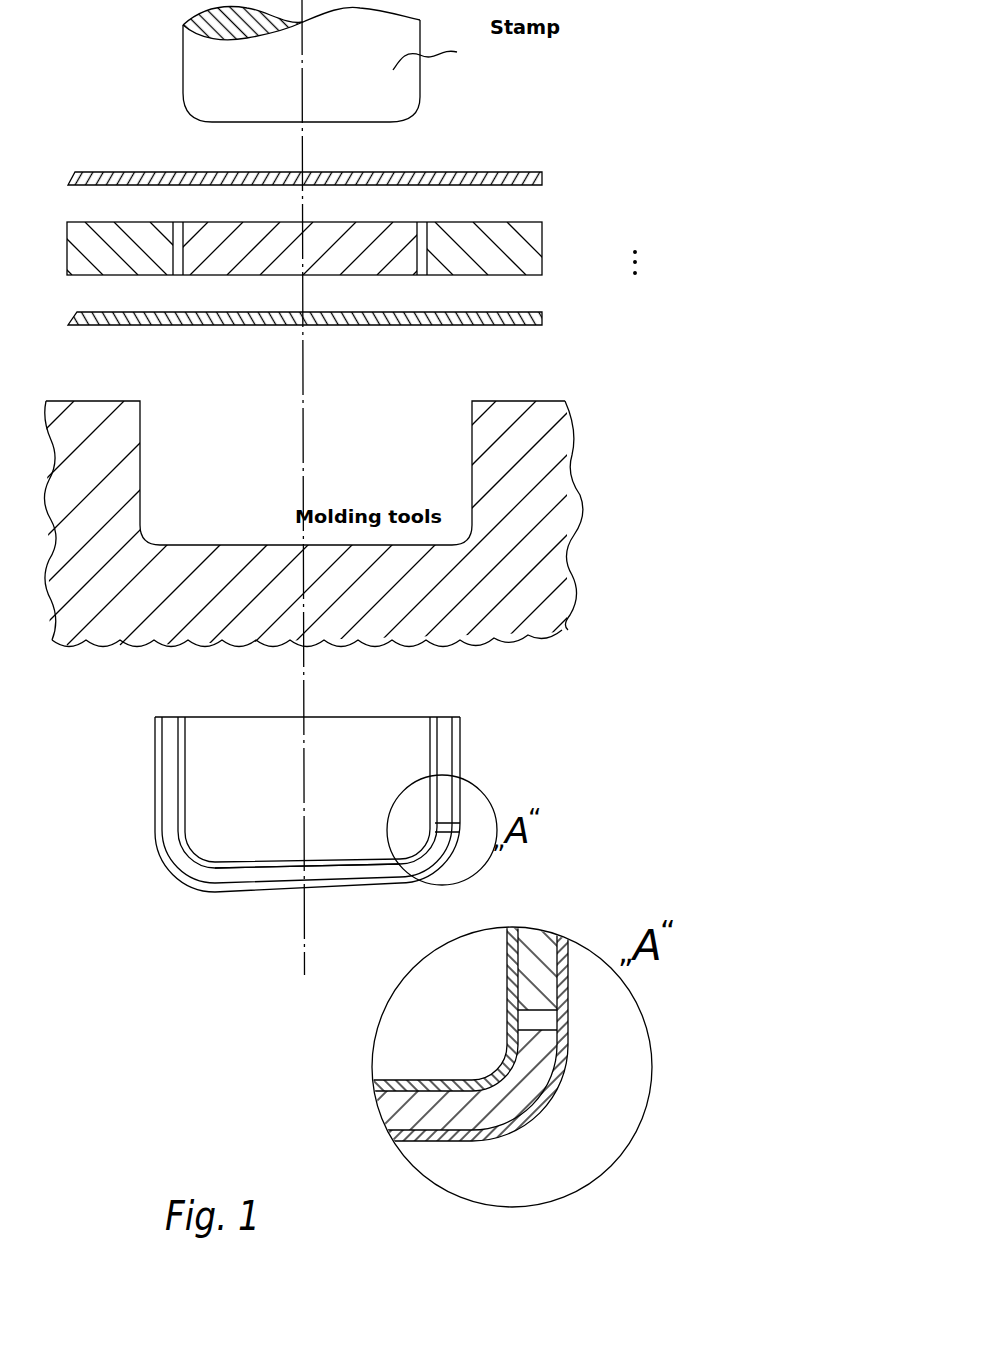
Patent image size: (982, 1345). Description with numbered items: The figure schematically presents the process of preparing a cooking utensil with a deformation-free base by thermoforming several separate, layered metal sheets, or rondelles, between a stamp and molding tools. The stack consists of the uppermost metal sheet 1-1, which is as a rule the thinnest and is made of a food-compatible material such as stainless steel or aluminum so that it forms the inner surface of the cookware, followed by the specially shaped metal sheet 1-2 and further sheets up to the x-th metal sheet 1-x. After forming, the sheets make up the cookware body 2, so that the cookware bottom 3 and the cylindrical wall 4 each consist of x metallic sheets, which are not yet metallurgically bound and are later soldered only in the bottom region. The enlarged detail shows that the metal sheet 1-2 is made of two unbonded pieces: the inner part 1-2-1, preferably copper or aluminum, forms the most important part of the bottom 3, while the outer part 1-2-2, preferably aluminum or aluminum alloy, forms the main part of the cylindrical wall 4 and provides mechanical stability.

The uppermost metal sheet 1-1 is at (518, 173).
The metal sheet 1-2 is at (530, 242).
The x-th metal sheet 1-x is at (530, 318).
The inner part 1-2-1 is at (410, 1113).
The outer part 1-2-2 is at (537, 942).
The cookware body 2 is at (332, 750).
The cookware bottom 3 is at (330, 877).
The cylindrical wall 4 is at (443, 748).